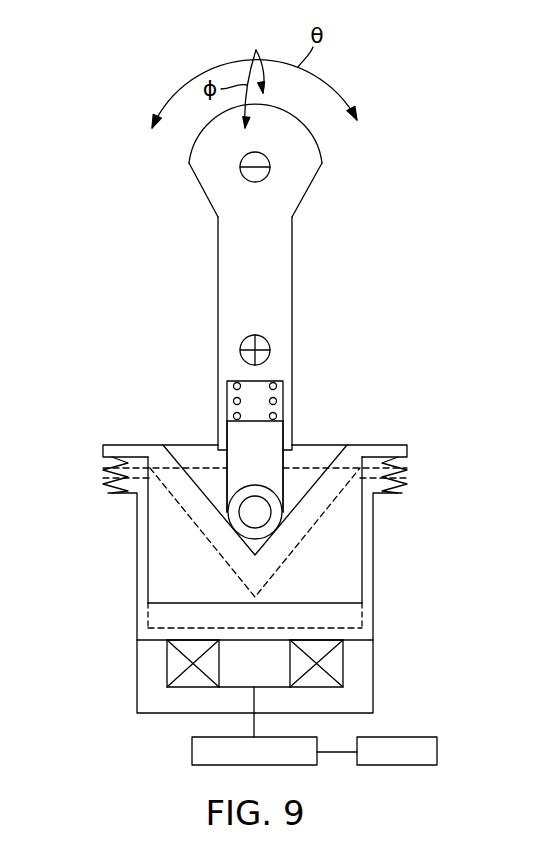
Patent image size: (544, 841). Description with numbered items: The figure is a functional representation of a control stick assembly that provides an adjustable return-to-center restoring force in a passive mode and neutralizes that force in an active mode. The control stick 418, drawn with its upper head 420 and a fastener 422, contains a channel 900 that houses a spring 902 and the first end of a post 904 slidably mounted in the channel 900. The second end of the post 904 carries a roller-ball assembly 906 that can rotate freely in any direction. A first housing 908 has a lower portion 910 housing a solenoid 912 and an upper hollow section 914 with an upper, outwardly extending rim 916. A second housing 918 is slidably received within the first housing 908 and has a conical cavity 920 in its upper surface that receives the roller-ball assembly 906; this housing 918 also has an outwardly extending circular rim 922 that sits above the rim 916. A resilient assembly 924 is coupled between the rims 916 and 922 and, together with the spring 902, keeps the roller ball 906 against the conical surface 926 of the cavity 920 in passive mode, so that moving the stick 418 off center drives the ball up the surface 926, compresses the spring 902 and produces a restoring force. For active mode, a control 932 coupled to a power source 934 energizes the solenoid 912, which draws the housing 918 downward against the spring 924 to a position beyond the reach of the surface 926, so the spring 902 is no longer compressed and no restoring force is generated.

The handle head 420 is at (322, 152).
The control stick 418 is at (237, 253).
The fastener 422 is at (247, 343).
The channel 900 is at (250, 383).
The spring 902 is at (274, 401).
The post 904 is at (276, 437).
The circular rim 922 is at (112, 445).
The resilient assembly 924 is at (102, 475).
The conical cavity 920 is at (212, 480).
The conical surface 926 is at (297, 505).
The roller-ball assembly 906 is at (243, 515).
The first housing 908 is at (137, 523).
The rim 916 is at (393, 495).
The second housing 918 is at (352, 588).
The upper hollow section 914 is at (145, 632).
The lower portion 910 is at (358, 698).
The solenoid 912 is at (335, 665).
The power source 934 is at (192, 750).
The control 932 is at (440, 752).